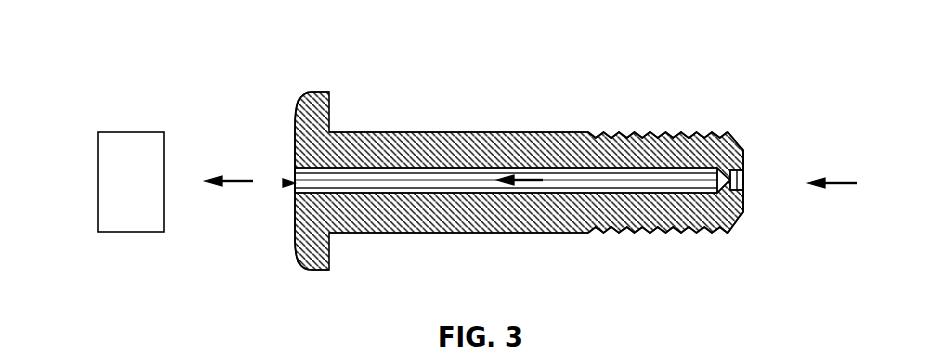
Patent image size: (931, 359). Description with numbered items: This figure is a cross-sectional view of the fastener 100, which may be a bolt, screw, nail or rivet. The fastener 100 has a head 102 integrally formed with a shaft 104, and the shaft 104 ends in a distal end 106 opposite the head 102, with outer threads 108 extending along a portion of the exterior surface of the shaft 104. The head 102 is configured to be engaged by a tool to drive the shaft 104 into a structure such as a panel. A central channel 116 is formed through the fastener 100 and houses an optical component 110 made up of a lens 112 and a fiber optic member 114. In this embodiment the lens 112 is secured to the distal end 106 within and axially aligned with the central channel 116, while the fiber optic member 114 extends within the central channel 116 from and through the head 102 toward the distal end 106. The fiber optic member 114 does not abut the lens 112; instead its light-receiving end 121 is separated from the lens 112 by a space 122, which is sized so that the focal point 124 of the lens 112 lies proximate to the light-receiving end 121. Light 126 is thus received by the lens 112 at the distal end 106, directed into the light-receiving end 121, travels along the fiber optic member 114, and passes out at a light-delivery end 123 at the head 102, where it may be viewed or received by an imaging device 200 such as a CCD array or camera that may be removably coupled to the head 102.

The fastener 100 is at (304, 58).
The head 102 is at (317, 270).
The shaft 104 is at (437, 132).
The distal end 106 is at (742, 215).
The outer threads 108 is at (690, 132).
The optical component 110 is at (283, 183).
The lens 112 is at (745, 177).
The fiber optic member 114 is at (458, 190).
The central channel 116 is at (397, 195).
The light-receiving end 121 is at (730, 188).
The space 122 is at (731, 165).
The light-delivery end 123 is at (290, 186).
The focal point 124 is at (715, 189).
The light 126 is at (227, 180).
The imaging device 200 is at (153, 196).